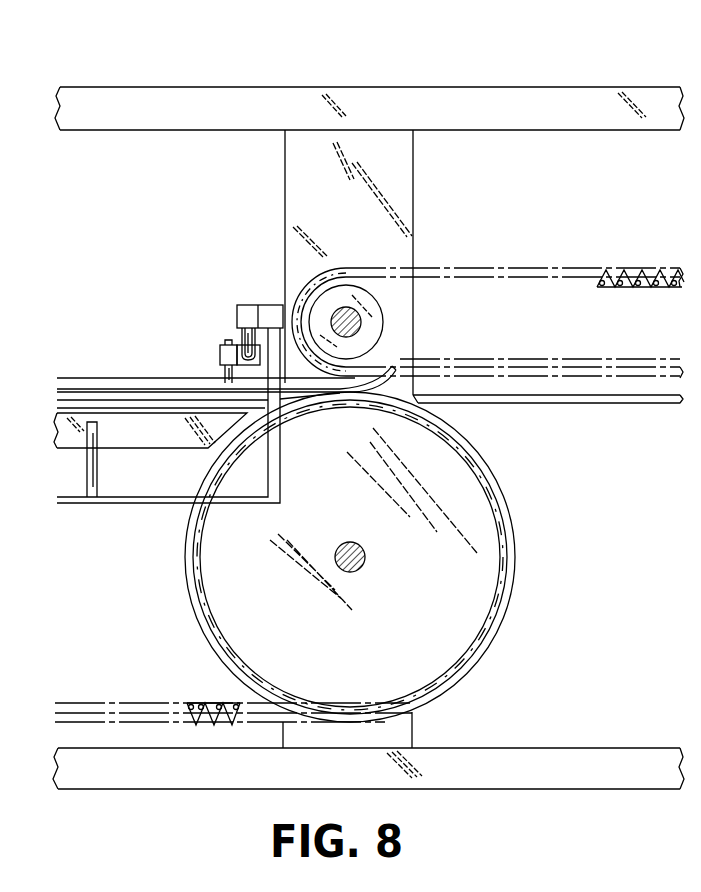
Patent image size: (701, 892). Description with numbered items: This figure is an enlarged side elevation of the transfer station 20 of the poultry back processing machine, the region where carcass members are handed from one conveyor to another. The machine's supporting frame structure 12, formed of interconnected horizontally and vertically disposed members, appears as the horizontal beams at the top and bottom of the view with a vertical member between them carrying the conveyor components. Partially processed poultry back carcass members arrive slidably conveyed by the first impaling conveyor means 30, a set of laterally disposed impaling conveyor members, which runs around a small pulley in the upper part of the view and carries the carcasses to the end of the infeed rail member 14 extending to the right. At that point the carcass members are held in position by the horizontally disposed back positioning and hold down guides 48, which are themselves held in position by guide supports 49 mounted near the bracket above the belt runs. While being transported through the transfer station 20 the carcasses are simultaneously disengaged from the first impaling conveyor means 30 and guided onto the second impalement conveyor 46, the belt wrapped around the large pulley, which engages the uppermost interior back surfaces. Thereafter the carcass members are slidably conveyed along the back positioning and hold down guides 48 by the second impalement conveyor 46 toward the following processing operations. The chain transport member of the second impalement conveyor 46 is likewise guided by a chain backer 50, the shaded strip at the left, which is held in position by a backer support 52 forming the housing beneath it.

The supporting frame structure 12 is at (526, 47).
The transfer station 20 is at (468, 217).
The first impaling conveyor means 30 is at (541, 268).
The infeed rail member 14 is at (559, 405).
The second impalement conveyor 46 is at (103, 390).
The back positioning and hold down guides 48 is at (162, 379).
The guide supports 49 is at (253, 305).
The chain backer 50 is at (142, 452).
The backer support 52 is at (140, 503).